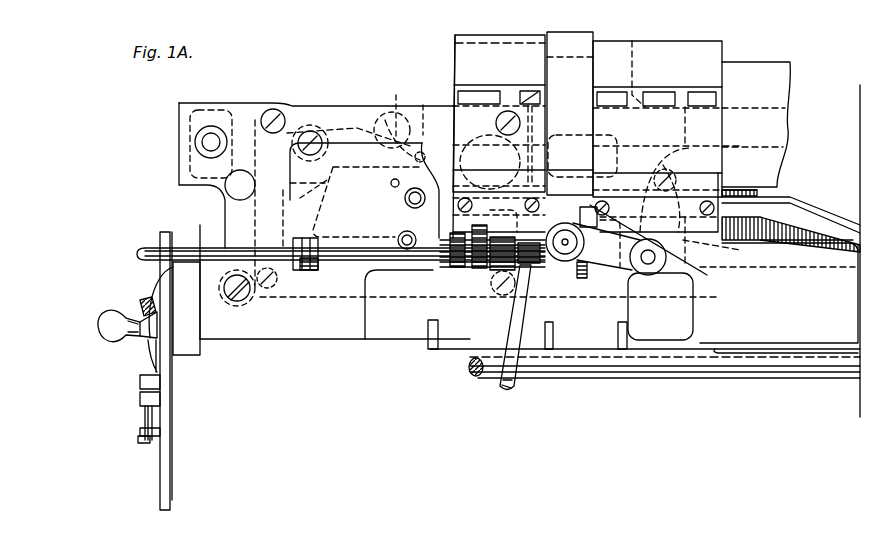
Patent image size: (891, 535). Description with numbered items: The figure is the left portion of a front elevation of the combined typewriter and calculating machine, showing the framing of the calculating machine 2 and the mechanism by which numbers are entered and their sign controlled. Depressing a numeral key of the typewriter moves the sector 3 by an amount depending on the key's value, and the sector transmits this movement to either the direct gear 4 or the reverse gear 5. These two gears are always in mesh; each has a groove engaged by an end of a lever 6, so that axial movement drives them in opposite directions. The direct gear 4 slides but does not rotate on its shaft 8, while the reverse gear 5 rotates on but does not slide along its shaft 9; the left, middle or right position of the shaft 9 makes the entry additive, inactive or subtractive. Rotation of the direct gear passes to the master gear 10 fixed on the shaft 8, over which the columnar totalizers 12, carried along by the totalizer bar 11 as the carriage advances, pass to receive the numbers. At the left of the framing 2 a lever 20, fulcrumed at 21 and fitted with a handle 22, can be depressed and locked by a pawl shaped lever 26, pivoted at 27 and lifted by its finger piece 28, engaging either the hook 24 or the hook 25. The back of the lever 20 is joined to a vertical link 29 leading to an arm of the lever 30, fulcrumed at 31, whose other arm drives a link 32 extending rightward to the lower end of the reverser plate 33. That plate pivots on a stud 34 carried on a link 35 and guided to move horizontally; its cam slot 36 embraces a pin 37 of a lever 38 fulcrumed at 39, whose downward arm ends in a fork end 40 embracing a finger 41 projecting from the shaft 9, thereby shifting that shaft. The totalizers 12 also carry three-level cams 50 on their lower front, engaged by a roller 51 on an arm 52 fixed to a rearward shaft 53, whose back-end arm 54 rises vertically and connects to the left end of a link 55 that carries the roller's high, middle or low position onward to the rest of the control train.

The framing of the calculating machine 2 is at (171, 444).
The sector 3 is at (517, 340).
The direct gear 4 is at (497, 262).
The reverse gear 5 is at (480, 265).
The lever 6 is at (815, 122).
The shaft 8 is at (460, 247).
The shaft 9 is at (380, 262).
The master gear 10 is at (578, 200).
The totalizer bar 11 is at (777, 72).
The columnar totalizers 12 is at (473, 60).
The lever 20 is at (155, 293).
The fulcrum 21 is at (163, 360).
The handle 22 is at (98, 326).
The hook 24 is at (138, 381).
The hook 25 is at (138, 398).
The pawl shaped lever 26 is at (140, 430).
The fulcrum 27 is at (145, 415).
The finger piece 28 is at (140, 440).
The link 29 is at (140, 310).
The lever 30 is at (205, 295).
The fulcrum 31 is at (255, 300).
The link 32 is at (329, 201).
The reverser plate 33 is at (392, 182).
The stud 34 is at (405, 198).
The link 35 is at (490, 162).
The cam slot 36 is at (405, 115).
The pin 37 is at (425, 162).
The lever 38 is at (357, 128).
The fulcrum 39 is at (310, 126).
The fork end 40 is at (296, 270).
The finger 41 is at (319, 269).
The cams 50 is at (445, 232).
The roller 51 is at (575, 278).
The arm 52 is at (612, 258).
The shaft 53 is at (652, 262).
The arm 54 is at (770, 291).
The link 55 is at (786, 190).